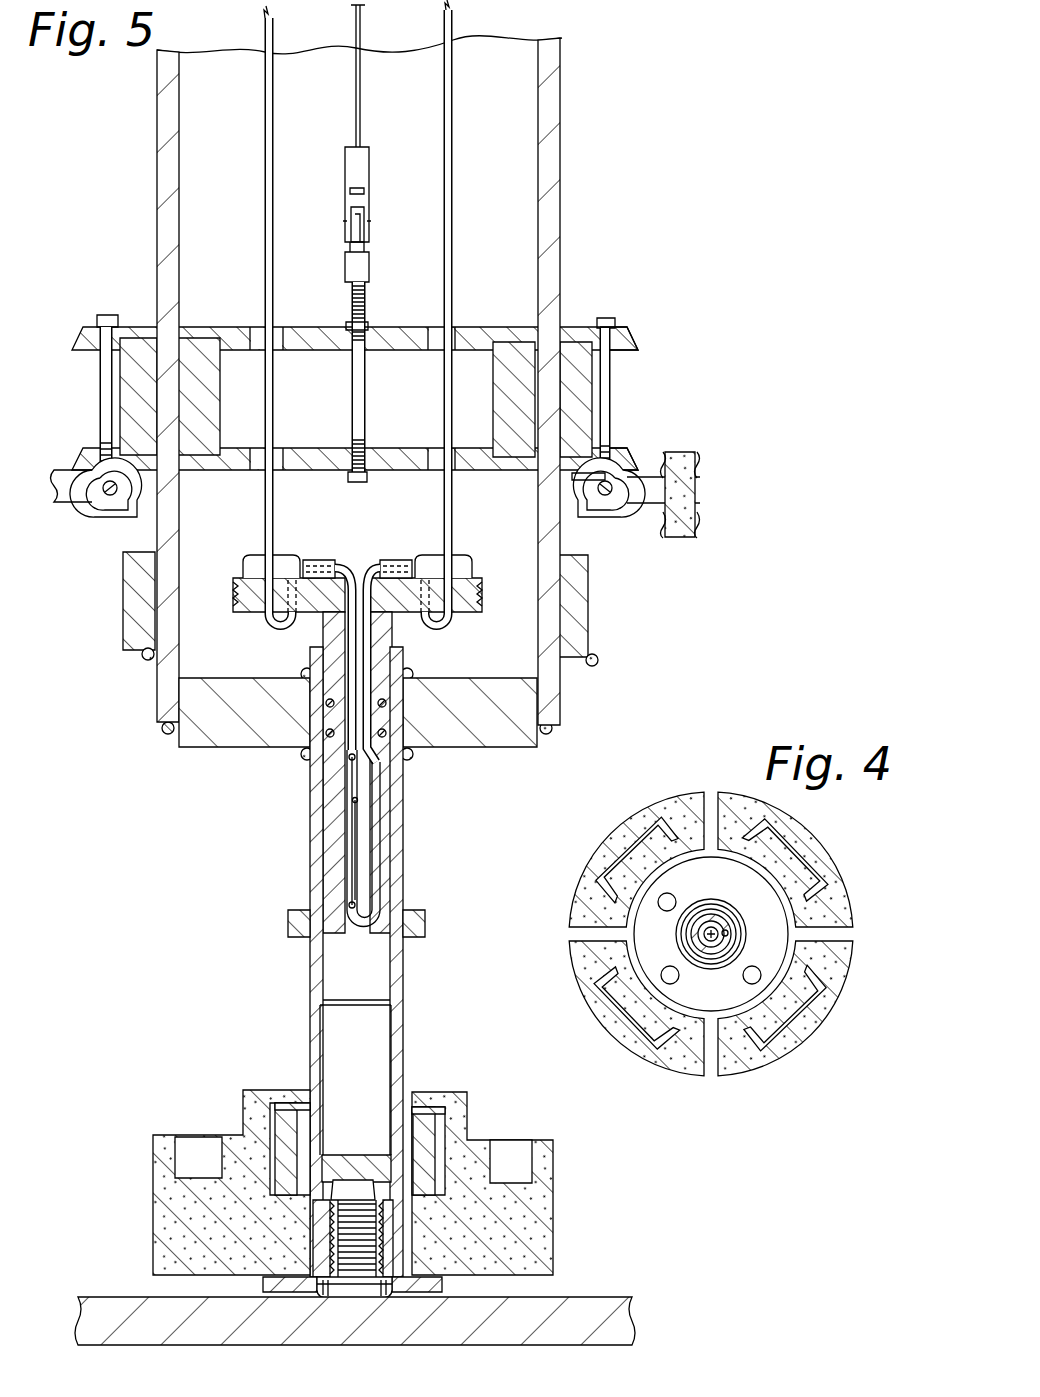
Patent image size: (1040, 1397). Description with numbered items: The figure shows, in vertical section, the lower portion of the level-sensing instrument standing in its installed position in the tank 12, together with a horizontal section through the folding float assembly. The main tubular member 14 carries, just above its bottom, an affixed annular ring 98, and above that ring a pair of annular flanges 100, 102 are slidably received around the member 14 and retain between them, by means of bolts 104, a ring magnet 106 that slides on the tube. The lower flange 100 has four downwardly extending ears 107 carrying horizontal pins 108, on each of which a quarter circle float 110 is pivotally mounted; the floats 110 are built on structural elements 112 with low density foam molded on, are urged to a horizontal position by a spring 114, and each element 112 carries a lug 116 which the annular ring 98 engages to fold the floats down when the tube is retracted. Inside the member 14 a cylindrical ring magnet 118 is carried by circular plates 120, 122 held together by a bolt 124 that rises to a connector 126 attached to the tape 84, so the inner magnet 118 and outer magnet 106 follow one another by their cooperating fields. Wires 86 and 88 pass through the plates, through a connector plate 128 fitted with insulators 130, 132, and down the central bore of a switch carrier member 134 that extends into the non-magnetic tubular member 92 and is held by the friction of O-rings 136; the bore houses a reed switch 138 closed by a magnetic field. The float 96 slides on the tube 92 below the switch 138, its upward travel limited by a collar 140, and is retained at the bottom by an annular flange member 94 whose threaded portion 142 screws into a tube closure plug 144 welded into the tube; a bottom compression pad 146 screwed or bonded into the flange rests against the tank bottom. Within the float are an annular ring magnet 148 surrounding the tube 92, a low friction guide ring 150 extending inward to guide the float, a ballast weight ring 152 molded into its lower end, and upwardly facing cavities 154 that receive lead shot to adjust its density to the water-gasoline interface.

In FIG. 5, the tank 12 is at (510, 1330).
In FIG. 5, the tubular member 14 is at (548, 150).
In FIG. 5, the tape 84 is at (362, 30).
In FIG. 5, the wire 86 is at (275, 103).
In FIG. 5, the wire 88 is at (455, 99).
In FIG. 5, the tubular member 92 is at (403, 840).
In FIG. 4, the tubular member 92 is at (722, 925).
In FIG. 5, the annular flange member 94 is at (445, 1285).
In FIG. 5, the float 96 is at (540, 1205).
In FIG. 4, the float 96 is at (793, 922).
In FIG. 5, the annular ring 98 is at (590, 610).
In FIG. 5, the lower annular flange 100 is at (632, 458).
In FIG. 5, the upper annular flange 102 is at (630, 340).
In FIG. 5, the bolts 104 is at (608, 368).
In FIG. 5, the ring magnet 106 is at (582, 390).
In FIG. 5, the ears 107 is at (577, 480).
In FIG. 5, the pins 108 is at (600, 527).
In FIG. 4, the quarter circle float 110 is at (667, 796).
In FIG. 5, the structural element 112 is at (627, 512).
In FIG. 4, the structural element 112 is at (823, 1010).
In FIG. 5, the spring 114 is at (100, 516).
In FIG. 5, the lug 116 is at (132, 552).
In FIG. 5, the cylindrical ring magnet 118 is at (518, 338).
In FIG. 5, the circular plate 120 is at (310, 335).
In FIG. 5, the circular plate 122 is at (315, 452).
In FIG. 5, the bolt 124 is at (368, 390).
In FIG. 5, the connector 126 is at (372, 223).
In FIG. 5, the connector plate 128 is at (475, 568).
In FIG. 5, the insulator 130 is at (290, 555).
In FIG. 5, the insulator 132 is at (355, 560).
In FIG. 5, the switch carrier member 134 is at (322, 625).
In FIG. 4, the switch carrier member 134 is at (690, 938).
In FIG. 5, the O-rings 136 is at (325, 735).
In FIG. 5, the reed switch 138 is at (350, 820).
In FIG. 4, the reed switch 138 is at (711, 928).
In FIG. 5, the collar 140 is at (290, 925).
In FIG. 5, the threaded portion 142 is at (330, 1215).
In FIG. 5, the tube closure plug 144 is at (357, 1155).
In FIG. 5, the bottom compression pad 146 is at (356, 1300).
In FIG. 5, the annular ring magnet 148 is at (428, 1130).
In FIG. 5, the guide ring 150 is at (405, 1098).
In FIG. 5, the ballast weight ring 152 is at (260, 1252).
In FIG. 5, the cavities 154 is at (512, 1183).